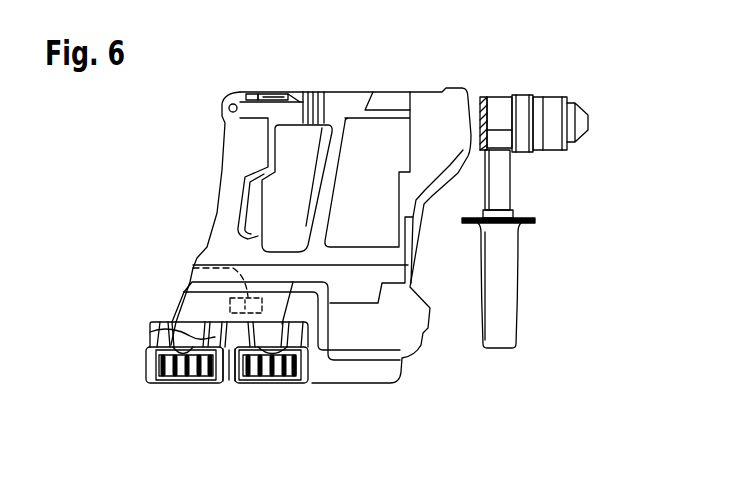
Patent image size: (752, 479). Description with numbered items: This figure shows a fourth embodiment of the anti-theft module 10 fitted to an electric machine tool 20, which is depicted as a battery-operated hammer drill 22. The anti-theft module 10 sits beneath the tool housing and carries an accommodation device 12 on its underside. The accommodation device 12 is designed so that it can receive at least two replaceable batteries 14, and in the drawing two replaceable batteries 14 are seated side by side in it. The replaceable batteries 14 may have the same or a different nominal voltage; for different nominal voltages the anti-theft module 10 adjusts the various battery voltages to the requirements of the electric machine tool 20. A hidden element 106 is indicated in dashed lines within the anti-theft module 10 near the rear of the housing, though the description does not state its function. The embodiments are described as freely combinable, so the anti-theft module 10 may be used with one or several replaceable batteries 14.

The anti-theft module 10 is at (360, 269).
The accommodation device 12 is at (150, 332).
The replaceable battery 14 is at (190, 378).
The locking element 106 is at (193, 268).
The electric machine tool 20 is at (556, 221).
The battery-operated hammer drill 22 is at (553, 181).